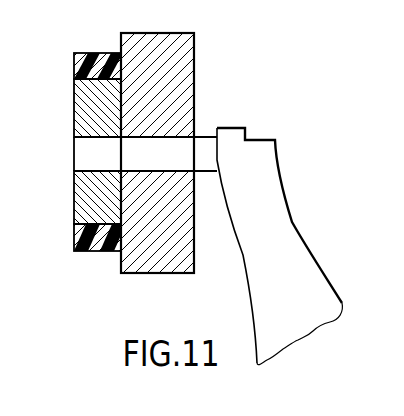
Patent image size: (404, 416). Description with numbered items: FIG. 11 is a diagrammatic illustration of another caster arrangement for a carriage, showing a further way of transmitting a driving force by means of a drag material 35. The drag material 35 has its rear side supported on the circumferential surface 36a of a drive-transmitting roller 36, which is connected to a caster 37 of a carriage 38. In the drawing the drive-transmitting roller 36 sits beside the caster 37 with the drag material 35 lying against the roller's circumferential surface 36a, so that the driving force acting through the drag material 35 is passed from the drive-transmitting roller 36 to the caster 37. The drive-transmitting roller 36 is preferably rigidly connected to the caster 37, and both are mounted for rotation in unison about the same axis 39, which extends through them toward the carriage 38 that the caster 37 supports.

The drag material 35 is at (98, 62).
The drive transmitting roller 36 is at (97, 117).
The circumferential surface 36a is at (97, 84).
The caster 37 is at (170, 69).
The carriage 38 is at (253, 218).
The axis 39 is at (177, 152).